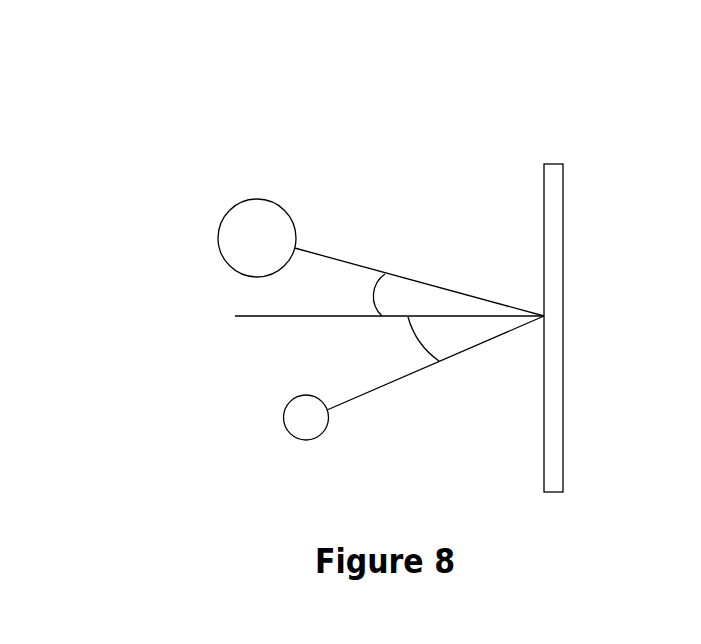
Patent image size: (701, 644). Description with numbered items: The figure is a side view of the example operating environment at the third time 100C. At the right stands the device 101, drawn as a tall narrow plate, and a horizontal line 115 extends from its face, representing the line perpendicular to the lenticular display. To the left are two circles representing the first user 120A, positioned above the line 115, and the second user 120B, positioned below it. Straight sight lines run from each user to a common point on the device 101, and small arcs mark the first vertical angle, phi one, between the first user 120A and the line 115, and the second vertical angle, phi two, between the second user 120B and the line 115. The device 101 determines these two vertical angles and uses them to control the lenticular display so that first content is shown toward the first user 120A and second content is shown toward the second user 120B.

The example operating environment at the third time 100C is at (181, 94).
The device 101 is at (563, 184).
The line perpendicular to the lenticular display 115 is at (302, 317).
The first user 120A is at (236, 202).
The second user 120B is at (297, 397).